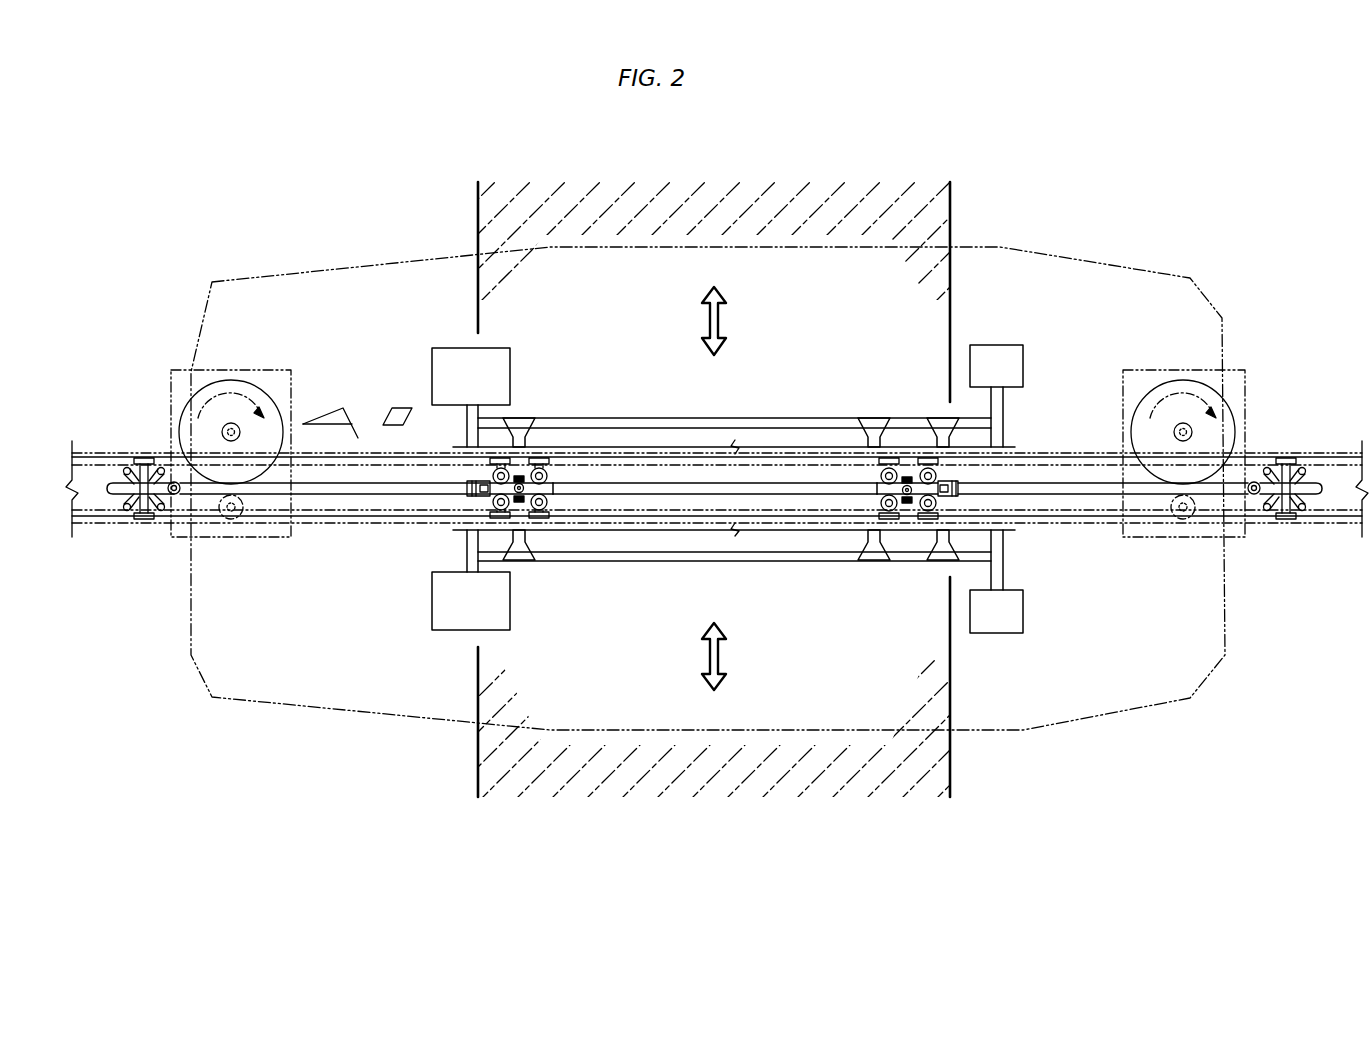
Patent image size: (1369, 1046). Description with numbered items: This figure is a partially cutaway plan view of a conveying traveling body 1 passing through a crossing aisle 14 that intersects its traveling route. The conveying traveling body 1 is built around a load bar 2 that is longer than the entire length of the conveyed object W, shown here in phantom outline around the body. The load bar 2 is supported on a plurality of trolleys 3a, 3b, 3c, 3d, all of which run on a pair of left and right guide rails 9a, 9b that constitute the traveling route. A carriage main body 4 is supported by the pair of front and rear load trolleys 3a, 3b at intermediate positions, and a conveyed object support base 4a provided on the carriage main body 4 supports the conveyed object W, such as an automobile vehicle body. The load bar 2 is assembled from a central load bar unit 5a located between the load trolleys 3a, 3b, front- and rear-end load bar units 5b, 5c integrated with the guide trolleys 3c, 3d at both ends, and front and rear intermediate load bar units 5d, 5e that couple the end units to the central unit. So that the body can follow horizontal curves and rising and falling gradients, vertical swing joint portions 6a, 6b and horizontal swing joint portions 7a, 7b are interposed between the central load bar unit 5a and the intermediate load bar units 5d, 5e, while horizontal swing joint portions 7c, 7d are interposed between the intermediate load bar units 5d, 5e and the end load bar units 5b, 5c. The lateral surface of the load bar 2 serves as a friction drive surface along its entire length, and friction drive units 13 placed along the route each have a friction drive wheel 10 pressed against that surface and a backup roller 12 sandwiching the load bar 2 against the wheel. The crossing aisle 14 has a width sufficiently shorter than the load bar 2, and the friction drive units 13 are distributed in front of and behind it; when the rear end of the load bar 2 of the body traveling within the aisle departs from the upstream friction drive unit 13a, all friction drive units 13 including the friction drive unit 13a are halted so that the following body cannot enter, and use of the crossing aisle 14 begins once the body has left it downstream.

The conveying traveling body 1 is at (731, 488).
The load bar 2 is at (772, 502).
The load trolley 3a is at (545, 522).
The load trolley 3b is at (889, 526).
The guide trolley 3c is at (137, 522).
The guide trolley 3d is at (1287, 522).
The carriage main body 4 is at (657, 428).
The conveyed object support base 4a is at (455, 362).
The central load bar unit 5a is at (735, 490).
The front-end load bar unit 5b is at (123, 490).
The rear-end load bar unit 5c is at (1285, 486).
The front intermediate load bar unit 5d is at (365, 495).
The rear intermediate load bar unit 5e is at (1103, 496).
The vertical swing joint portion 6a is at (480, 497).
The vertical swing joint portion 6b is at (945, 486).
The horizontal swing joint portion 7a is at (521, 478).
The horizontal swing joint portion 7b is at (907, 503).
The horizontal swing joint portion 7c is at (174, 495).
The horizontal swing joint portion 7d is at (1254, 496).
The guide rail 9a is at (1061, 462).
The guide rail 9b is at (1060, 522).
The friction drive wheel 10 is at (257, 394).
The backup roller 12 is at (255, 512).
The friction drive unit 13 is at (240, 362).
The friction drive unit 13a is at (1201, 362).
The crossing aisle 14 is at (762, 202).
The conveyed object W is at (1098, 260).